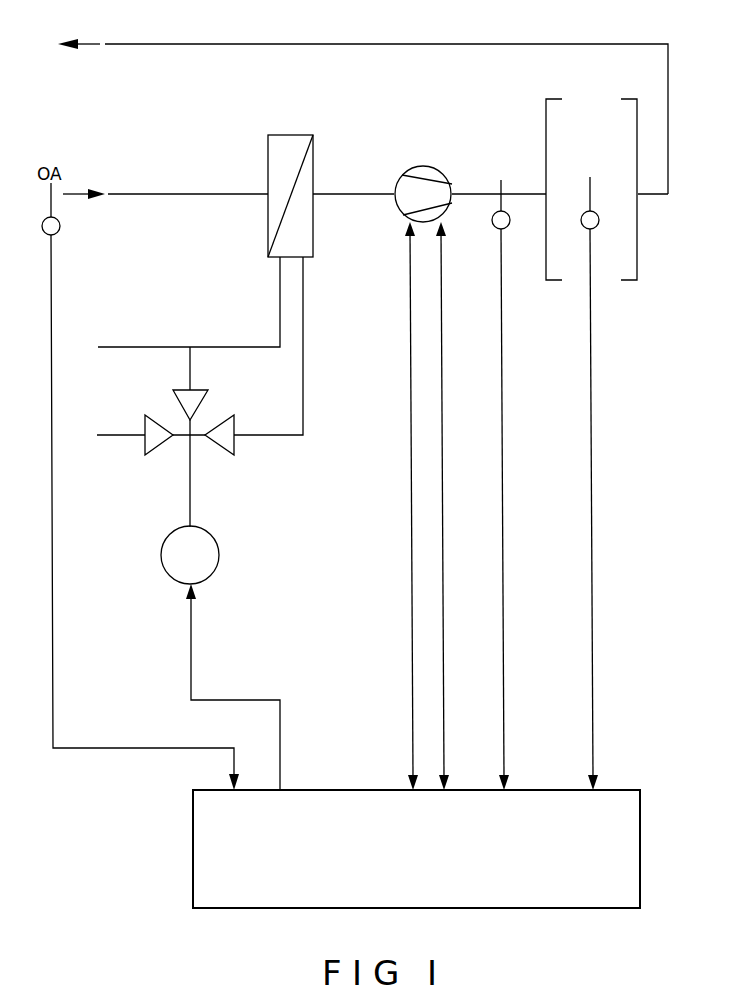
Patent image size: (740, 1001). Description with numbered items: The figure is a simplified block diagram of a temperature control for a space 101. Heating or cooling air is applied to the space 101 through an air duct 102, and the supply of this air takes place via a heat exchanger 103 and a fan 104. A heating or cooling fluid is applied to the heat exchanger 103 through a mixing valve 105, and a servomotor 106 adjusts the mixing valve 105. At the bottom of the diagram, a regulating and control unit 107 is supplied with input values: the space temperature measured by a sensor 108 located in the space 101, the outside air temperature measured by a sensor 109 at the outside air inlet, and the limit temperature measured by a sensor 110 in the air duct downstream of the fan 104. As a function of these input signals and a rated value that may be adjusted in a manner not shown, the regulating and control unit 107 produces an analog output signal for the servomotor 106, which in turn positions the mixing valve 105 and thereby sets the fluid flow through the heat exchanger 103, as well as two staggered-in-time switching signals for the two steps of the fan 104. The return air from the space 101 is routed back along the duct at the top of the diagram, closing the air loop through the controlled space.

The space 101 is at (628, 220).
The air duct 102 is at (642, 41).
The heat exchanger 103 is at (282, 143).
The fan 104 is at (418, 165).
The mixing valve 105 is at (195, 440).
The servomotor 106 is at (220, 546).
The regulating and control unit 107 is at (640, 830).
The sensor 108 is at (582, 222).
The sensor 109 is at (60, 226).
The sensor 110 is at (492, 220).